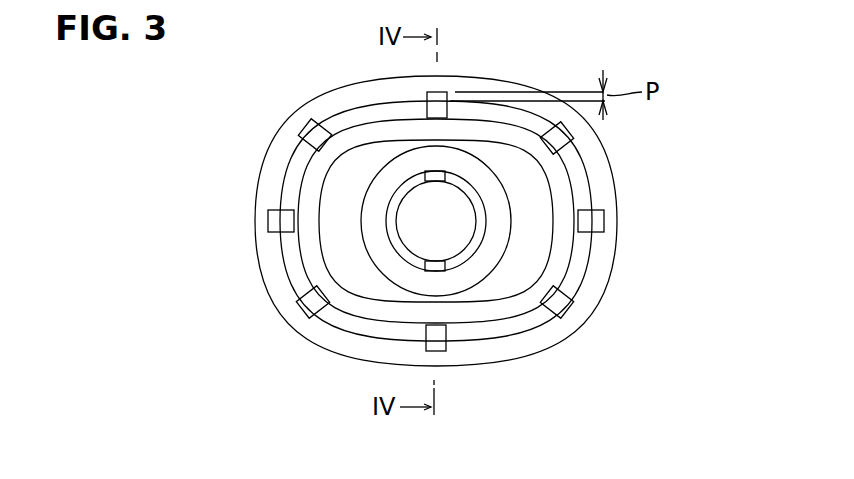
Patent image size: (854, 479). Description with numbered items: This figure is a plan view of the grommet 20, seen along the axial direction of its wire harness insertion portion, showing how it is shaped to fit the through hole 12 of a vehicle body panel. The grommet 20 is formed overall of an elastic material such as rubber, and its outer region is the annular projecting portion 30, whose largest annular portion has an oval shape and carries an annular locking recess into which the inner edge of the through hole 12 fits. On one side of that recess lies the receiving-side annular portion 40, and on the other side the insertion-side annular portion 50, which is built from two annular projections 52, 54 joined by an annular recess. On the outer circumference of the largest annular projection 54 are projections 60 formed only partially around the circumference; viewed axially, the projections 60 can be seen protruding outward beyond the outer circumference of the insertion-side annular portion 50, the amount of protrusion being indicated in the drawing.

The through hole 12 is at (508, 245).
The grommet 20 is at (678, 152).
The annular projecting portion 30 is at (622, 253).
The receiving-side annular portion 40 is at (585, 298).
The insertion-side annular portion 50 is at (302, 174).
The annular projection 52 is at (362, 120).
The annular projection 54 is at (340, 112).
The projections 60 is at (442, 100).